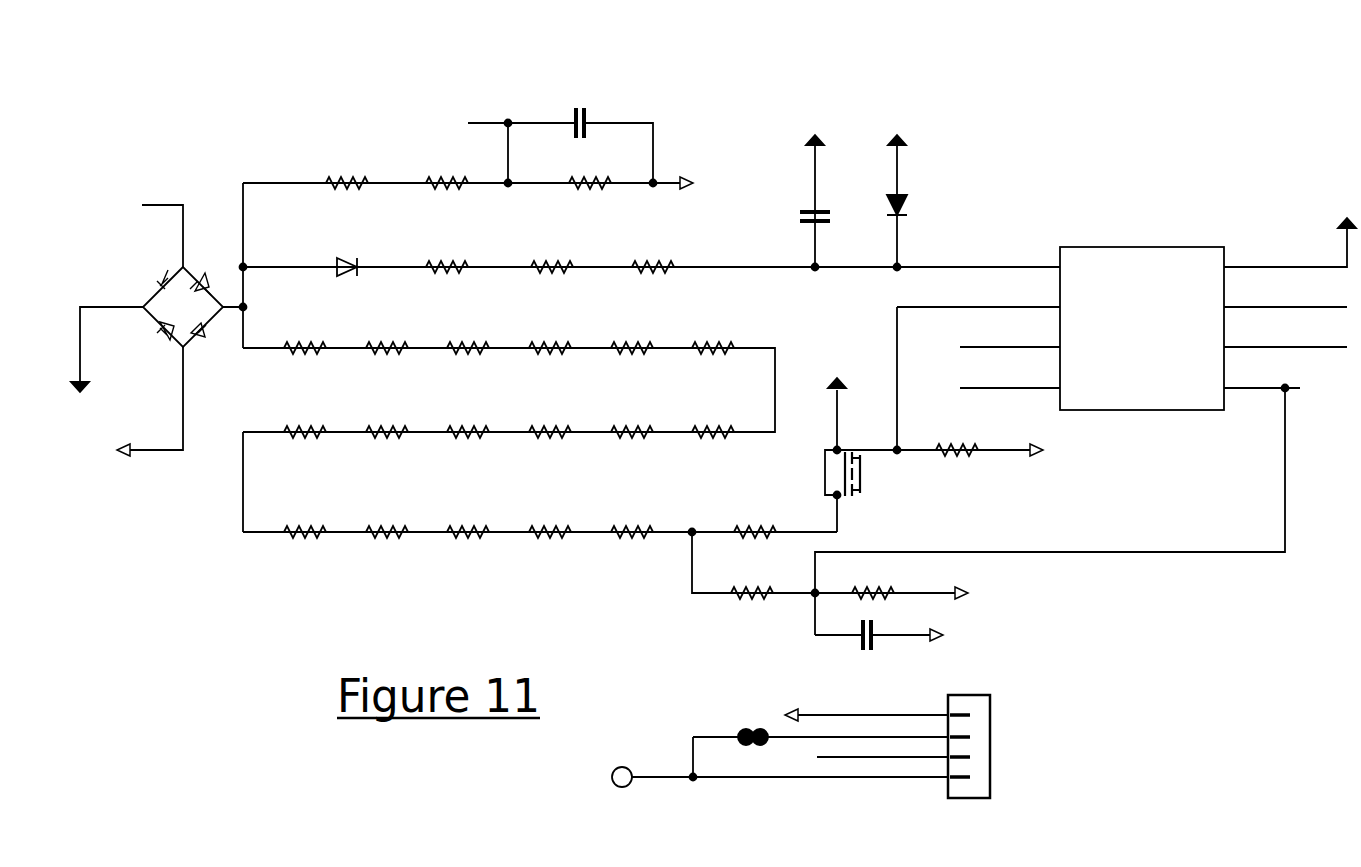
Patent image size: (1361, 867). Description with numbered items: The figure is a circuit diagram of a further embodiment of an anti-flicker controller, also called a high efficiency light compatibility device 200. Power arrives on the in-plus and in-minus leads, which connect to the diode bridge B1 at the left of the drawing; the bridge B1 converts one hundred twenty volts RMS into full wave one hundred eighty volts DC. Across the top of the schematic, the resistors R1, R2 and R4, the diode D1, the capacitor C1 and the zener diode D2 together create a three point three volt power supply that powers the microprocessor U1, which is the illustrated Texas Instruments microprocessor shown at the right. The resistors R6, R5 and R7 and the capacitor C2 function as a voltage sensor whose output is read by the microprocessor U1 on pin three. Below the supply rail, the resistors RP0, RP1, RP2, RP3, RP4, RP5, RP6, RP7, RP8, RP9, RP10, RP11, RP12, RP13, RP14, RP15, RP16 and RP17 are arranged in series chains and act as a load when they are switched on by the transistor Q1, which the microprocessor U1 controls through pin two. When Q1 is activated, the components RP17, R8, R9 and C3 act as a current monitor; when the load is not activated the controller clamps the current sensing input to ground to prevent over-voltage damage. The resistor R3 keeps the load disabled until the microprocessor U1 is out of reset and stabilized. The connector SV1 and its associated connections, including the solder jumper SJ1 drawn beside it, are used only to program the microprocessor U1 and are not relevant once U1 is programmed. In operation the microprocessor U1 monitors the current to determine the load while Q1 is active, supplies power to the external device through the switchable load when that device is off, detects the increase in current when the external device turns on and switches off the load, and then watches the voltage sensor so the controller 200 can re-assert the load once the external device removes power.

The anti-flicker controller 200 is at (1070, 120).
The microprocessor U1 is at (1144, 329).
The transistor Q1 is at (803, 448).
The diode bridge B1 is at (163, 311).
The diode D1 is at (347, 265).
The zener diode D2 is at (898, 201).
The capacitor C1 is at (812, 201).
The capacitor C2 is at (585, 121).
The capacitor C3 is at (868, 643).
The resistor R1 is at (447, 265).
The resistor R2 is at (552, 265).
The resistor R3 is at (957, 450).
The resistor R4 is at (653, 265).
The resistor R5 is at (447, 180).
The resistor R6 is at (347, 180).
The resistor R7 is at (590, 180).
The resistor R8 is at (754, 592).
The resistor R9 is at (869, 586).
The load resistor RP0 is at (305, 355).
The load resistor RP1 is at (387, 355).
The load resistor RP2 is at (468, 355).
The load resistor RP3 is at (550, 355).
The load resistor RP4 is at (632, 355).
The load resistor RP5 is at (713, 355).
The load resistor RP6 is at (713, 439).
The load resistor RP7 is at (632, 439).
The load resistor RP8 is at (550, 439).
The load resistor RP9 is at (468, 439).
The load resistor RP10 is at (386, 439).
The load resistor RP11 is at (304, 439).
The load resistor RP12 is at (305, 523).
The load resistor RP13 is at (387, 523).
The load resistor RP14 is at (468, 523).
The load resistor RP15 is at (550, 523).
The load resistor RP16 is at (632, 523).
The load resistor RP17 is at (755, 523).
The connector SV1 is at (912, 757).
The solder jumper SJ1 is at (754, 721).